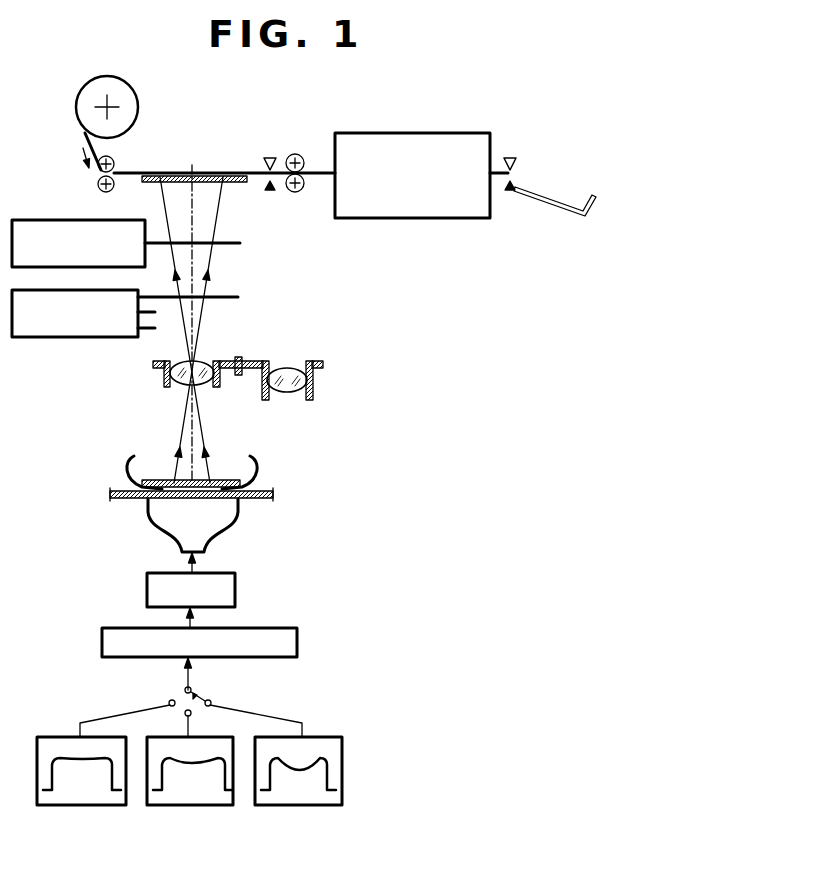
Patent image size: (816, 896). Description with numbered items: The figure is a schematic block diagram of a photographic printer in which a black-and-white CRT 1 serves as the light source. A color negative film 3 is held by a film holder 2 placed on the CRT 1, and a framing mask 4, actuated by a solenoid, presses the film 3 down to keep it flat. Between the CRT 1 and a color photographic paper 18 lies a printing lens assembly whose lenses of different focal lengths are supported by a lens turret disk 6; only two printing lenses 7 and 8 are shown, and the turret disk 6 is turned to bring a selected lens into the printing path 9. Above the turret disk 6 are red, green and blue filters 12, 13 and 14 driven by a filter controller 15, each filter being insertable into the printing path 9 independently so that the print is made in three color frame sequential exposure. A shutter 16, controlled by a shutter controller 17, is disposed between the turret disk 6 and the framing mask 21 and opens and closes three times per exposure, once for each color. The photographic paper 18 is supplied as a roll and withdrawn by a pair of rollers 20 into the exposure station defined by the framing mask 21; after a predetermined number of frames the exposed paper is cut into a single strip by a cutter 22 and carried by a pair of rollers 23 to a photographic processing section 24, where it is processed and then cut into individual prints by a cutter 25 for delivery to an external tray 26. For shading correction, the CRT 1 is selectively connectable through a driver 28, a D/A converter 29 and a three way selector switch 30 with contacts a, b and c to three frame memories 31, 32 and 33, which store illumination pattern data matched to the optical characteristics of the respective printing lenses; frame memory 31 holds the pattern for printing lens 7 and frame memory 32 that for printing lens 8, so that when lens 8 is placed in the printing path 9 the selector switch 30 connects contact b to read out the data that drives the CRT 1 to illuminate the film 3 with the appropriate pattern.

The black-and-white CRT 1 is at (208, 527).
The film holder 2 is at (122, 500).
The color negative film 3 is at (122, 472).
The framing mask 4 is at (155, 480).
The lens turret disk 6 is at (253, 360).
The printing lens 7 is at (181, 387).
The printing lens 8 is at (288, 393).
The printing path 9 is at (194, 215).
The red filter 12 is at (148, 332).
The green filter 13 is at (150, 307).
The blue filter 14 is at (228, 294).
The filter controller 15 is at (70, 338).
The shutter 16 is at (241, 244).
The shutter controller 17 is at (70, 219).
The color photographic paper 18 is at (82, 142).
The pair of rollers 20 is at (115, 160).
The framing mask 21 is at (238, 175).
The cutter 22 is at (270, 155).
The pair of rollers 23 is at (295, 153).
The photographic processing section 24 is at (405, 224).
The cutter 25 is at (510, 155).
The external tray 26 is at (552, 207).
The driver 28 is at (237, 593).
The D/A converter 29 is at (298, 640).
The three way selector switch 30 is at (193, 688).
The frame memory 31 is at (300, 806).
The frame memory 32 is at (185, 806).
The frame memory 33 is at (80, 806).
The contact a is at (211, 702).
The contact b is at (192, 714).
The contact c is at (170, 701).